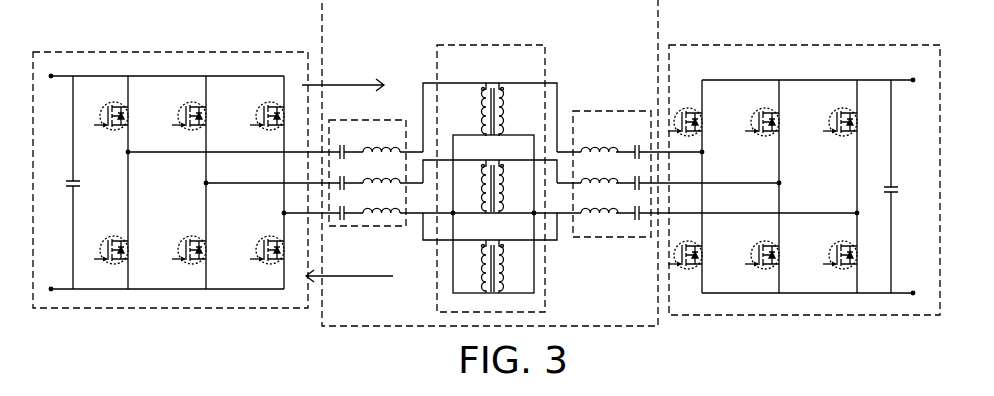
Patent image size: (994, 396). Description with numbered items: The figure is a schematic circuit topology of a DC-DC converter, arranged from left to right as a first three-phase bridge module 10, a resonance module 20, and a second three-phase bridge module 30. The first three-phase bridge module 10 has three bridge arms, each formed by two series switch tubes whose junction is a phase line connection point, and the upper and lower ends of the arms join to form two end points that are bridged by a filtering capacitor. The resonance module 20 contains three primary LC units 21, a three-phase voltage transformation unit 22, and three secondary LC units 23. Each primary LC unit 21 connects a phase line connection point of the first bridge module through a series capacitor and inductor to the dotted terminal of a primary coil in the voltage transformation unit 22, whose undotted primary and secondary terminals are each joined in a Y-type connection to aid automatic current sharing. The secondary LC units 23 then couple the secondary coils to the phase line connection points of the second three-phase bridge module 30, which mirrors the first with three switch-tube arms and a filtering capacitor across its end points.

The first three-phase bridge module 10 is at (210, 62).
The resonance module 20 is at (467, 1).
The primary LC units 21 is at (370, 128).
The three-phase voltage transformation unit 22 is at (480, 58).
The secondary LC units 23 is at (601, 125).
The second three-phase bridge module 30 is at (783, 58).